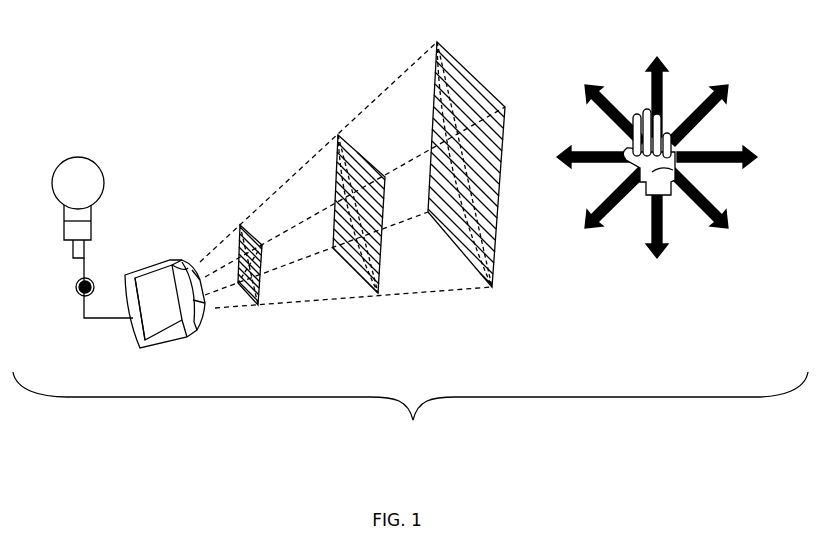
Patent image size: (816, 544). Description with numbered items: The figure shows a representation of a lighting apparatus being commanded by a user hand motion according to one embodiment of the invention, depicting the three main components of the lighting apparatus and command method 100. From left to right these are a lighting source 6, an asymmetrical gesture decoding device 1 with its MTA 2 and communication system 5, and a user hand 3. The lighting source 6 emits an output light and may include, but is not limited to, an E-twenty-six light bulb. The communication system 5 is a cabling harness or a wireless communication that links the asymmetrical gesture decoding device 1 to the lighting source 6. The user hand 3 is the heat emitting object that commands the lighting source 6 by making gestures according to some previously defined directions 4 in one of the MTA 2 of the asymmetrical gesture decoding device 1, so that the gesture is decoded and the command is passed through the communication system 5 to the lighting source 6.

The asymmetrical gesture decoding device 1 is at (175, 330).
The MTA 2 is at (260, 278).
The user hand 3 is at (654, 170).
The previously defined directions 4 is at (619, 238).
The communication system 5 is at (72, 284).
The lighting source 6 is at (76, 194).
The lighting apparatus and command method 100 is at (410, 413).